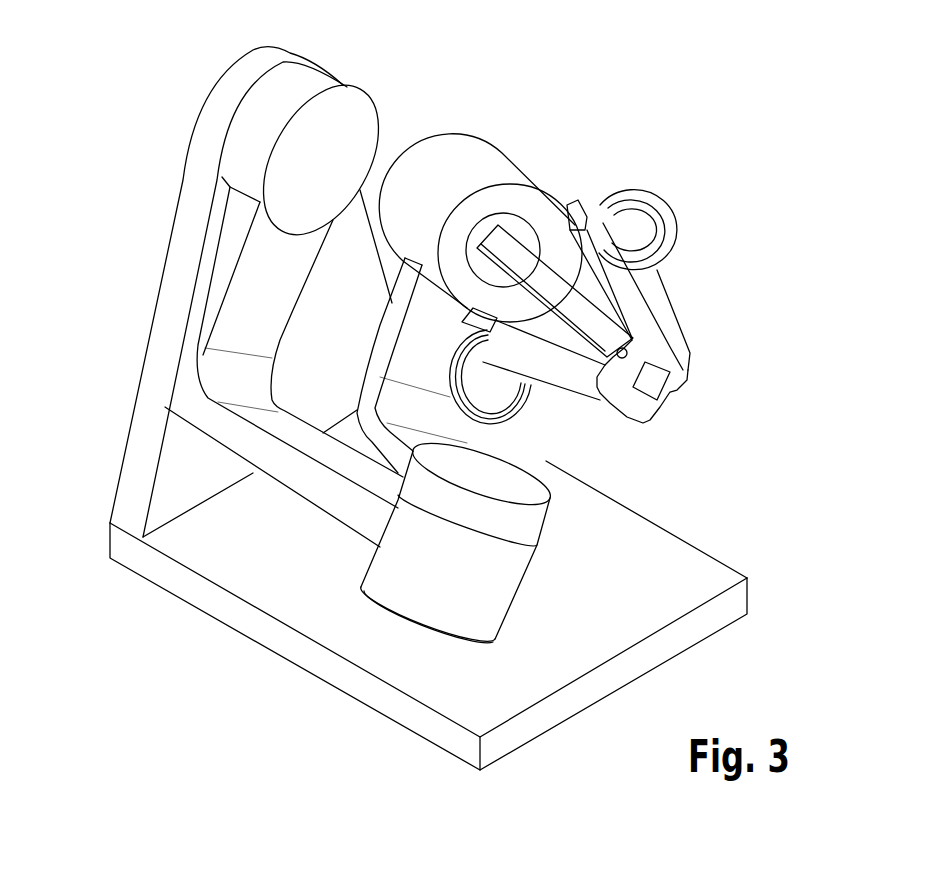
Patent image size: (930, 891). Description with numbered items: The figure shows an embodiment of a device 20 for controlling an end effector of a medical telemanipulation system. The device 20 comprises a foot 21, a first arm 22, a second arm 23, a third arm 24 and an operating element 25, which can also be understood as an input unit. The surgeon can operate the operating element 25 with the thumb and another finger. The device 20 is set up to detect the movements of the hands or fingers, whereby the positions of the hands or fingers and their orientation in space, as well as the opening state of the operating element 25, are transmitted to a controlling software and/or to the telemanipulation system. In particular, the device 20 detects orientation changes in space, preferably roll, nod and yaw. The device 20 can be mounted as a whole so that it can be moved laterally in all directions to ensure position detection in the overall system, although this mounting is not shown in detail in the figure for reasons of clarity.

The device 20 is at (578, 106).
The foot 21 is at (690, 567).
The first arm 22 is at (140, 442).
The second arm 23 is at (205, 283).
The third arm 24 is at (377, 360).
The operating element 25 is at (707, 282).